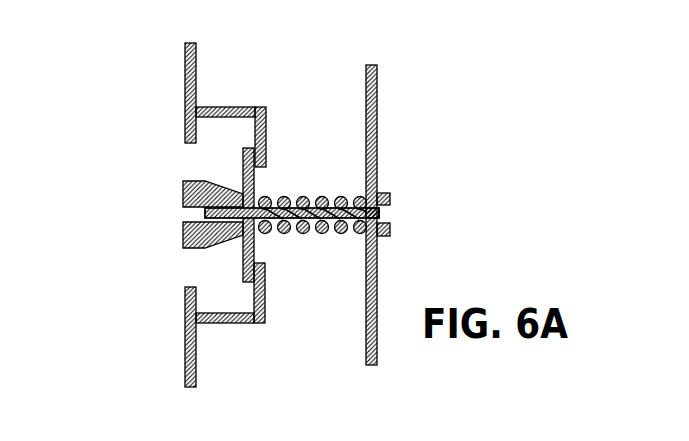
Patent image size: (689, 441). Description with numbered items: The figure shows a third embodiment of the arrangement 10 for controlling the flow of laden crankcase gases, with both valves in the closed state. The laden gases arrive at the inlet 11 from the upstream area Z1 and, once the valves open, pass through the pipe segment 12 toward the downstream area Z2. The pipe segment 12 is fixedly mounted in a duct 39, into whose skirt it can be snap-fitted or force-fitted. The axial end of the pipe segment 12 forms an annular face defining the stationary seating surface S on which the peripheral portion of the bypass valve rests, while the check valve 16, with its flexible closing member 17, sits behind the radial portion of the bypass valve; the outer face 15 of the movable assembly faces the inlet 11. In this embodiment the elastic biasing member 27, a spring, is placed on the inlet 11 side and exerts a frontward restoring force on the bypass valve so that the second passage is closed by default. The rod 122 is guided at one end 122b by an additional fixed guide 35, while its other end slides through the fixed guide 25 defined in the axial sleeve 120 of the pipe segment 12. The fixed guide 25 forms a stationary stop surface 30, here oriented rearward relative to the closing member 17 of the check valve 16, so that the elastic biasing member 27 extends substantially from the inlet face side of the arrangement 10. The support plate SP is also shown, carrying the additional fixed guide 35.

The arrangement 10 is at (122, 377).
The inlet 11 is at (360, 126).
The pipe segment 12 is at (222, 107).
The outer face 15 is at (265, 299).
The check valve 16 is at (243, 262).
The flexible closing member 17 is at (266, 152).
The fixed guide 25 is at (215, 245).
The elastic biasing member 27 is at (305, 197).
The stationary stop surface 30 is at (253, 223).
The additional fixed guide 35 is at (382, 207).
The duct 39 is at (197, 72).
The axial sleeve 120 is at (190, 183).
The rod 122 is at (308, 233).
The end of the rod 122b is at (379, 214).
The stationary seating surface S is at (262, 107).
The support plate SP is at (377, 110).
The upstream area Z1 is at (338, 340).
The downstream area Z2 is at (168, 143).